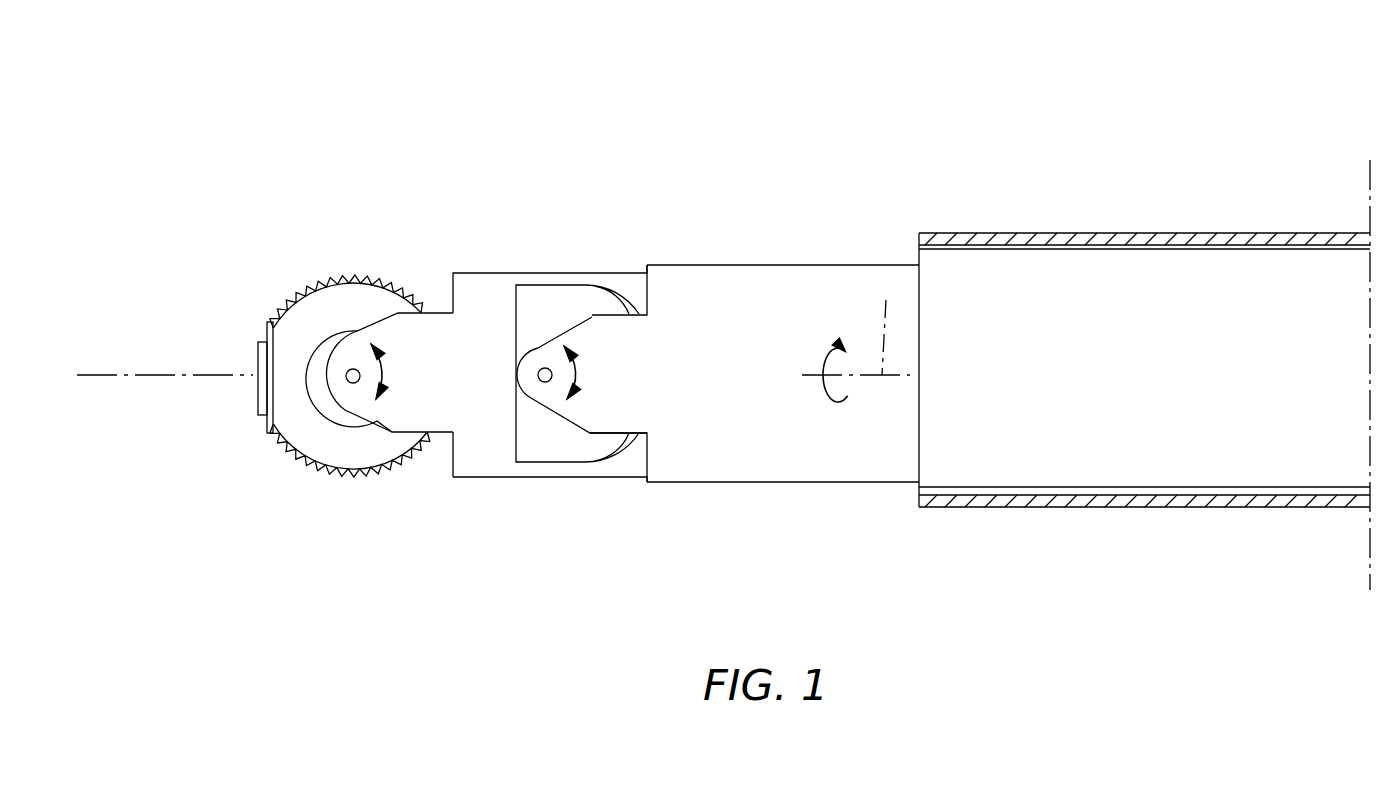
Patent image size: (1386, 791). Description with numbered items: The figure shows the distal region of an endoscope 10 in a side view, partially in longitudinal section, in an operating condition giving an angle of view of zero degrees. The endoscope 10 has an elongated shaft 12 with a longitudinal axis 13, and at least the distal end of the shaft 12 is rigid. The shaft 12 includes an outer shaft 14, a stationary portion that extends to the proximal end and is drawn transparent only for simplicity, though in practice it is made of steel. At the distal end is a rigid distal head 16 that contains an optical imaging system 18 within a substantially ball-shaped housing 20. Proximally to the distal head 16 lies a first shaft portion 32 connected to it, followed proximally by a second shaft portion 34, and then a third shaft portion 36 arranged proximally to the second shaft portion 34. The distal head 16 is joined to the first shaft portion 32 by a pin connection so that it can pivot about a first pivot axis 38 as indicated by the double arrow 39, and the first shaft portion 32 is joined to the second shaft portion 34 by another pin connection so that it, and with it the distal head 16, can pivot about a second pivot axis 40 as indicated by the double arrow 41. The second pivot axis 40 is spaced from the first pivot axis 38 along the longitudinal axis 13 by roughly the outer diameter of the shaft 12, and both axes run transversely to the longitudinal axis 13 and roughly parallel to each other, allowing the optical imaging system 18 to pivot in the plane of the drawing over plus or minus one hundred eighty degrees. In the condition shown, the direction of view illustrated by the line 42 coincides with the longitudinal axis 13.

The endoscope 10 is at (978, 168).
The shaft 12 is at (770, 222).
The longitudinal axis 13 is at (886, 300).
The outer shaft 14 is at (1131, 235).
The distal head 16 is at (343, 503).
The optical imaging system 18 is at (248, 395).
The ball-shaped housing 20 is at (310, 433).
The first shaft portion 32 is at (472, 492).
The second shaft portion 34 is at (722, 498).
The third shaft portion 36 is at (1020, 513).
The first pivot axis 38 is at (352, 368).
The double arrow 39 is at (383, 378).
The second pivot axis 40 is at (543, 368).
The double arrow 41 is at (573, 370).
The line illustrating direction of view 42 is at (172, 372).